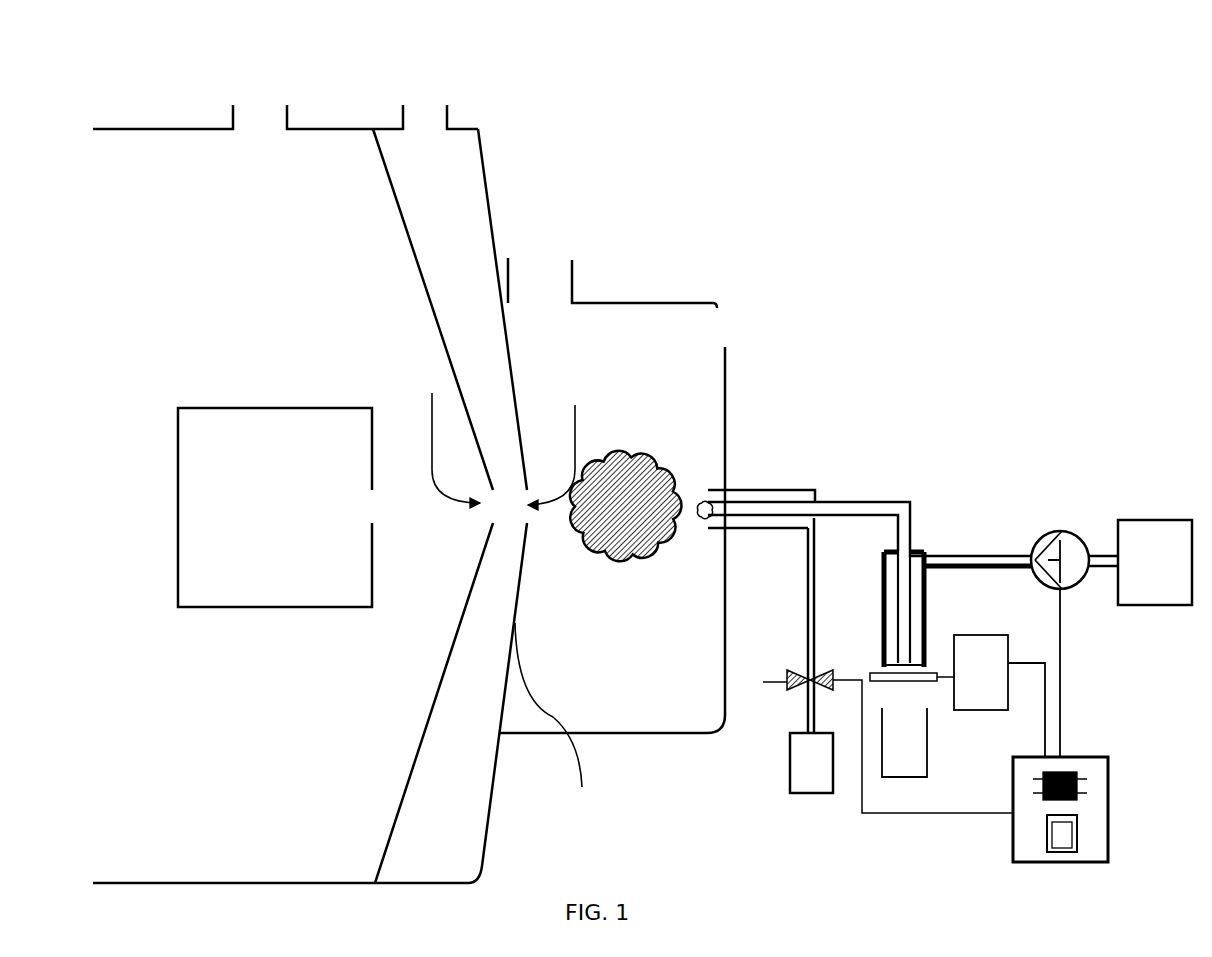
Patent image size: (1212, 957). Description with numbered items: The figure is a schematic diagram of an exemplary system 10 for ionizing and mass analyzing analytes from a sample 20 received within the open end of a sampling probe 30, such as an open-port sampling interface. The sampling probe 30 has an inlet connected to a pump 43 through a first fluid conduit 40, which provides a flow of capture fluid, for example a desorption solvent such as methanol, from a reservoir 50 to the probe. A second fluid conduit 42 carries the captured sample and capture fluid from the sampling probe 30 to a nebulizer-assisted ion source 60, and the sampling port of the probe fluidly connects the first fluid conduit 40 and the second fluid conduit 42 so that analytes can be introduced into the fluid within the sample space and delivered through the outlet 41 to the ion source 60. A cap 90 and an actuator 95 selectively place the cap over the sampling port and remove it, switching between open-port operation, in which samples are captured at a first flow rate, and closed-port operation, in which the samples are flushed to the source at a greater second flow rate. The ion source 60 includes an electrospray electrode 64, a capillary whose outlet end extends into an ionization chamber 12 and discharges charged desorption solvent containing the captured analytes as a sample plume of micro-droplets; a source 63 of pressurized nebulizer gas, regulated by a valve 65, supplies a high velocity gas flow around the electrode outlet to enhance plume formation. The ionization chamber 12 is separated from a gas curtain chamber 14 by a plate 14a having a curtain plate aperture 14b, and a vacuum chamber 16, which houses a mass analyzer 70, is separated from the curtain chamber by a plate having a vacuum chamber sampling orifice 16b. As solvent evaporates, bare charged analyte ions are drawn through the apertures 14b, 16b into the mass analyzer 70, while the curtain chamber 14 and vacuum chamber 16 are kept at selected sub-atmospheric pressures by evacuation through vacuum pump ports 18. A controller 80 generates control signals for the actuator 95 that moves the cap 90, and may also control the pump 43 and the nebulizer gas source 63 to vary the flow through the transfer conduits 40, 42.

The system 10 is at (802, 853).
The ionization chamber 12 is at (693, 706).
The gas curtain chamber 14 is at (456, 853).
The plate 14a is at (562, 728).
The curtain plate aperture 14b is at (564, 437).
The vacuum chamber 16 is at (293, 506).
The vacuum chamber sampling orifice 16b is at (433, 429).
The vacuum pump ports 18 is at (420, 100).
The sample 20 is at (917, 753).
The sampling probe 30 is at (945, 602).
The first fluid conduit 40 is at (948, 540).
The outlet 41 is at (705, 495).
The second fluid conduit 42 is at (880, 478).
The pump 43 is at (1062, 531).
The reservoir 50 is at (1155, 562).
The ion source 60 is at (800, 458).
The nebulizer gas source 63 is at (811, 763).
The electrospray electrode 64 is at (743, 503).
The valve 65 is at (763, 682).
The mass analyzer 70 is at (418, 745).
The controller 80 is at (1108, 832).
The cap 90 is at (872, 675).
The actuator 95 is at (999, 696).